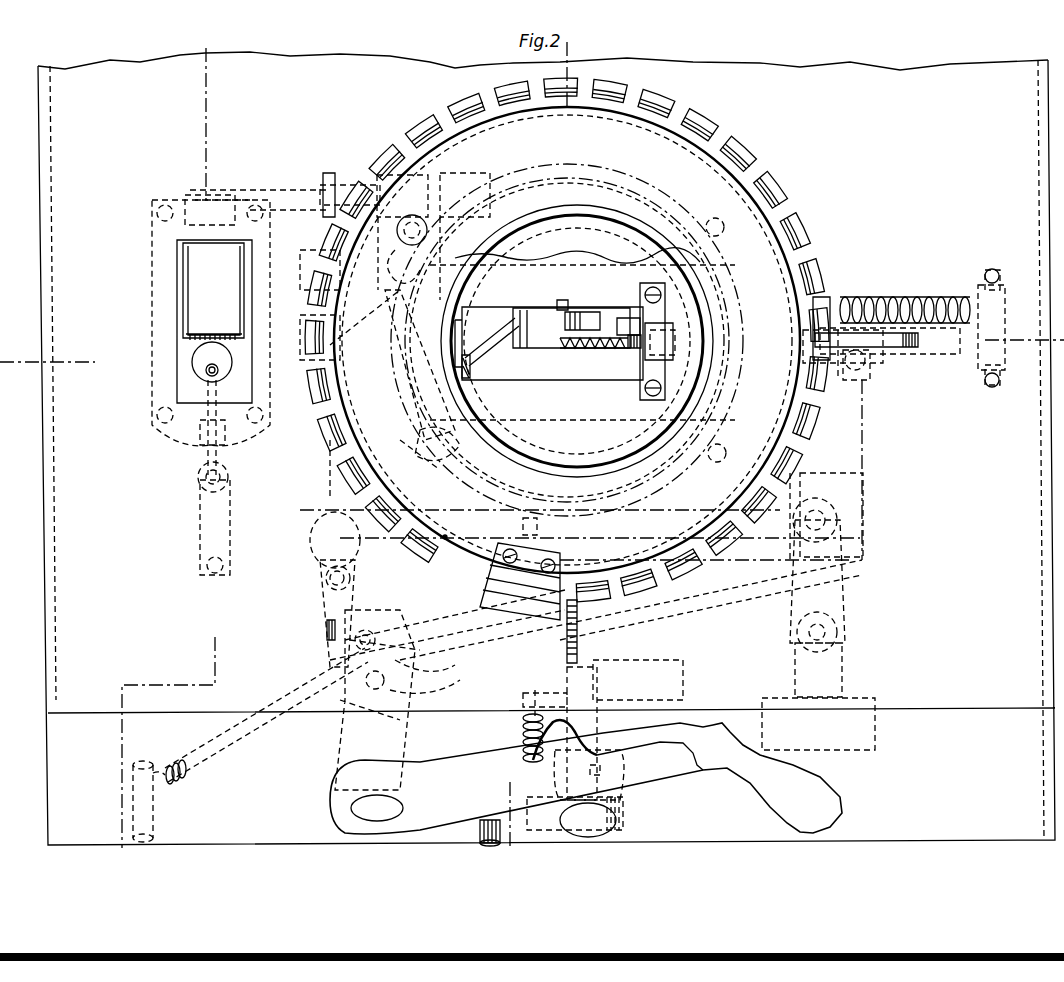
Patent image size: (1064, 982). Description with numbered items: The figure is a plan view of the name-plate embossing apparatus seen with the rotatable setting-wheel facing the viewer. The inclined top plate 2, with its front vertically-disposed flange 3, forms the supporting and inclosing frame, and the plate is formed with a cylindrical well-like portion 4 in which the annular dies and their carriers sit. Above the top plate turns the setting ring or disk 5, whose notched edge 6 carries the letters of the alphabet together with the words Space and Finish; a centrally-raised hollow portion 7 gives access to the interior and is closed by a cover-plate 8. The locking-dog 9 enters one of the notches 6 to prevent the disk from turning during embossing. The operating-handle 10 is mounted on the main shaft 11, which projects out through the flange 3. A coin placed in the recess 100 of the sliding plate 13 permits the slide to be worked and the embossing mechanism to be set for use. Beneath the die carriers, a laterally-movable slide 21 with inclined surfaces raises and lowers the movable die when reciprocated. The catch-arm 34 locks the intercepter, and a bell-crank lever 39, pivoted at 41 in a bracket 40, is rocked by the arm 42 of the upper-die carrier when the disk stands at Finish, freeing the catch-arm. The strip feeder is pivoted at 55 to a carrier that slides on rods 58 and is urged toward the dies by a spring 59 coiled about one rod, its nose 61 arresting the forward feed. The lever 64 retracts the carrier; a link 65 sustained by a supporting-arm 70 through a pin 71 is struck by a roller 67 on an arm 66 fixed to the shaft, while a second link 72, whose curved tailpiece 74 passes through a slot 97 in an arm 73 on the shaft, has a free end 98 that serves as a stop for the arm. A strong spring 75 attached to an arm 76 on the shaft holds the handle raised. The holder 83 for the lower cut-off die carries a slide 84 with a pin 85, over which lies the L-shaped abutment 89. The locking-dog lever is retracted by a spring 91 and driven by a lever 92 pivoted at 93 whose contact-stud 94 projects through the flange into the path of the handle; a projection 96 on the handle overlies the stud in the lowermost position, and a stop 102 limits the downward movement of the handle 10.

The top plate 2 is at (885, 212).
The front vertically-disposed flange 3 is at (473, 565).
The cylindrical well-like portion 4 is at (567, 340).
The setting-disk 5 is at (567, 349).
The notches 6 is at (816, 445).
The centrally-raised portion 7 is at (538, 445).
The cover-plate 8 is at (600, 236).
The locking-dog 9 is at (578, 637).
The operating-handle 10 is at (586, 778).
The shaft 11 is at (377, 808).
The sliding plate 13 is at (195, 268).
The laterally-movable slide 21 is at (549, 363).
The catch-arm 34 is at (494, 325).
The bell-crank lever 39 is at (580, 348).
The bracket 40 is at (585, 314).
The pivot 41 is at (562, 302).
The arm 42 is at (626, 318).
The pivot 55 is at (858, 376).
The rods 58 is at (1005, 335).
The spring 59 is at (912, 296).
The nose 61 is at (895, 343).
The lever 64 is at (850, 562).
The link 65 is at (835, 520).
The arm 66 is at (325, 592).
The roller 67 is at (312, 540).
The supporting-arm 70 is at (445, 537).
The pin 71 is at (537, 530).
The link 72 is at (705, 580).
The arm 73 is at (450, 675).
The curved tailpiece 74 is at (325, 630).
The spring 75 is at (226, 740).
The arm 76 is at (400, 690).
The frame or holder 83 is at (640, 382).
The slide 84 is at (665, 365).
The pin 85 is at (630, 345).
The L-shaped abutment 89 is at (648, 350).
The spring 91 is at (523, 730).
The lever 92 is at (590, 717).
The pivot 93 is at (660, 680).
The contact-stud 94 is at (605, 820).
The projection 96 is at (565, 737).
The slot 97 is at (440, 625).
The free end 98 is at (445, 652).
The recess 100 is at (200, 357).
The stop 102 is at (480, 832).